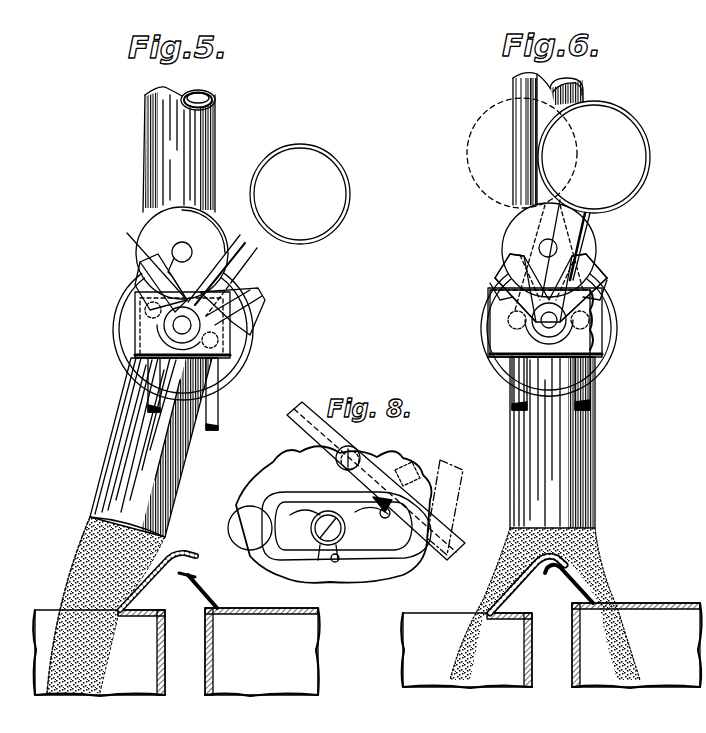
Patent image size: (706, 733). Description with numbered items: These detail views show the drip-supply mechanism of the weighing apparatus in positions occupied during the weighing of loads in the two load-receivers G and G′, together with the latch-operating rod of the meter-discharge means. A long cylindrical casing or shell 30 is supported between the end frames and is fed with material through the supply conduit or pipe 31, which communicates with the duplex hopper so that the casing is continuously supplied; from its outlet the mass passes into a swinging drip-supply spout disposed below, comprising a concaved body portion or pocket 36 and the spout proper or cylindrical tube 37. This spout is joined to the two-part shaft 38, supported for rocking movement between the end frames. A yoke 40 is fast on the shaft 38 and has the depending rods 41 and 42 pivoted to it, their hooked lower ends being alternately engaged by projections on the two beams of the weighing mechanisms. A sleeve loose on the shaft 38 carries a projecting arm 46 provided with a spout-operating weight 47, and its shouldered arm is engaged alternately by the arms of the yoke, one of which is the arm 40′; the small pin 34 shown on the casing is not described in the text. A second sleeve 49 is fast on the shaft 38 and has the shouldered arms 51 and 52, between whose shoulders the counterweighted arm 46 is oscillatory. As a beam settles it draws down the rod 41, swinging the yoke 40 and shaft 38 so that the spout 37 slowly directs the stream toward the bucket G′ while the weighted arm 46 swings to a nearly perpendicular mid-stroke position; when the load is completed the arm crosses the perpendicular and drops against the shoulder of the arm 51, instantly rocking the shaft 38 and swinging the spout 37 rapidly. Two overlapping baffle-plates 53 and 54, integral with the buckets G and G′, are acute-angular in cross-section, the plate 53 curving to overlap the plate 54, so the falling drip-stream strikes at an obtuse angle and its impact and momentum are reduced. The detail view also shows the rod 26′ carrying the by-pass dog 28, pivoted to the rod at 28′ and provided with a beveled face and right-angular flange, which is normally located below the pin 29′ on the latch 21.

In FIG. 5, the supply conduit or pipe 31 is at (214, 124).
In FIG. 6, the supply conduit or pipe 31 is at (520, 125).
In FIG. 5, the cylindrical casing or shell 30 is at (160, 222).
In FIG. 6, the cylindrical casing or shell 30 is at (537, 167).
In FIG. 5, the pin 34 is at (185, 243).
In FIG. 6, the pin 34 is at (540, 239).
In FIG. 5, the yoke 40 is at (150, 270).
In FIG. 6, the yoke 40 is at (505, 306).
In FIG. 5, the arm of the yoke 40′ is at (170, 268).
In FIG. 6, the arm of the yoke 40′ is at (505, 263).
In FIG. 5, the shouldered arm 51 is at (150, 277).
In FIG. 6, the shouldered arm 51 is at (495, 284).
In FIG. 5, the concaved body portion or pocket 36 is at (118, 311).
In FIG. 6, the concaved body portion or pocket 36 is at (618, 319).
In FIG. 5, the two-part shaft 38 is at (178, 325).
In FIG. 6, the two-part shaft 38 is at (545, 324).
In FIG. 5, the second sleeve 49 is at (172, 334).
In FIG. 6, the second sleeve 49 is at (545, 335).
In FIG. 5, the depending rod 41 is at (154, 393).
In FIG. 6, the depending rod 41 is at (520, 374).
In FIG. 5, the depending rod 42 is at (213, 422).
In FIG. 6, the depending rod 42 is at (585, 376).
In FIG. 5, the drip-supply spout 37 is at (126, 443).
In FIG. 6, the drip-supply spout 37 is at (594, 474).
In FIG. 5, the projecting arm 46 is at (258, 255).
In FIG. 6, the projecting arm 46 is at (582, 226).
In FIG. 5, the spout-operating weight 47 is at (293, 218).
In FIG. 6, the spout-operating weight 47 is at (594, 157).
In FIG. 5, the shouldered arm 52 is at (238, 307).
In FIG. 6, the shouldered arm 52 is at (600, 289).
In FIG. 5, the baffle-plate 53 is at (170, 573).
In FIG. 6, the baffle-plate 53 is at (532, 575).
In FIG. 5, the baffle-plate 54 is at (196, 590).
In FIG. 6, the baffle-plate 54 is at (578, 583).
In FIG. 8, the rod 26′ is at (300, 420).
In FIG. 8, the by-pass dog 28 is at (427, 489).
In FIG. 8, the pivot of the by-pass dog 28′ is at (342, 463).
In FIG. 8, the latch 21 is at (298, 535).
In FIG. 8, the pin 29′ is at (385, 520).
In FIG. 5, the load-receiver or bucket G is at (99, 653).
In FIG. 6, the load-receiver or bucket G is at (551, 645).
In FIG. 5, the load-receiver or bucket G′ is at (262, 652).